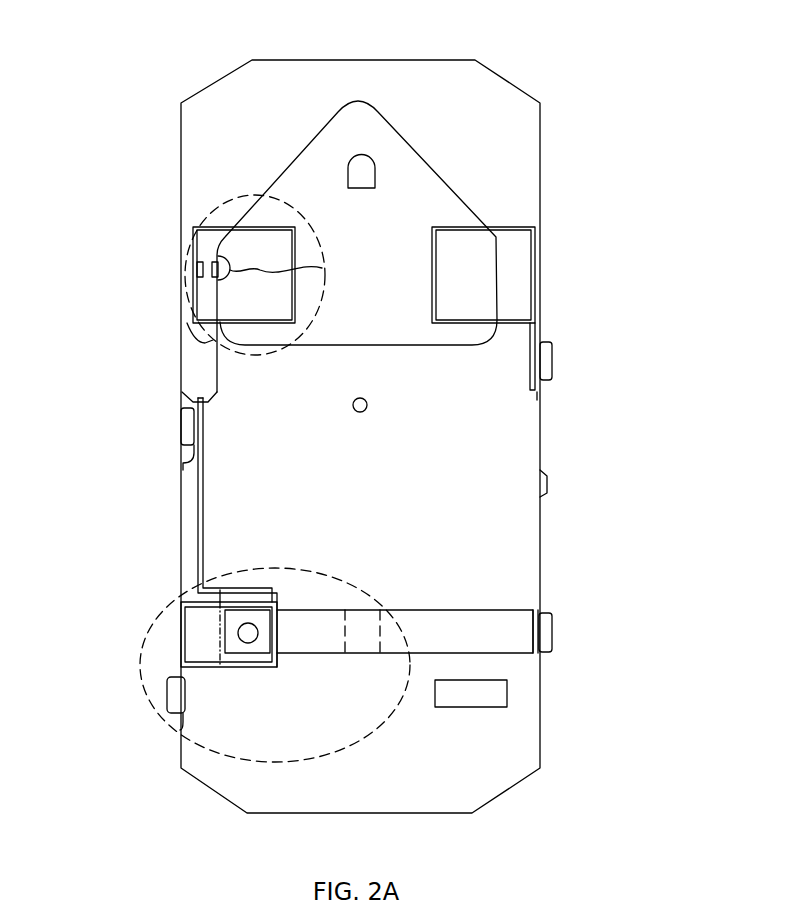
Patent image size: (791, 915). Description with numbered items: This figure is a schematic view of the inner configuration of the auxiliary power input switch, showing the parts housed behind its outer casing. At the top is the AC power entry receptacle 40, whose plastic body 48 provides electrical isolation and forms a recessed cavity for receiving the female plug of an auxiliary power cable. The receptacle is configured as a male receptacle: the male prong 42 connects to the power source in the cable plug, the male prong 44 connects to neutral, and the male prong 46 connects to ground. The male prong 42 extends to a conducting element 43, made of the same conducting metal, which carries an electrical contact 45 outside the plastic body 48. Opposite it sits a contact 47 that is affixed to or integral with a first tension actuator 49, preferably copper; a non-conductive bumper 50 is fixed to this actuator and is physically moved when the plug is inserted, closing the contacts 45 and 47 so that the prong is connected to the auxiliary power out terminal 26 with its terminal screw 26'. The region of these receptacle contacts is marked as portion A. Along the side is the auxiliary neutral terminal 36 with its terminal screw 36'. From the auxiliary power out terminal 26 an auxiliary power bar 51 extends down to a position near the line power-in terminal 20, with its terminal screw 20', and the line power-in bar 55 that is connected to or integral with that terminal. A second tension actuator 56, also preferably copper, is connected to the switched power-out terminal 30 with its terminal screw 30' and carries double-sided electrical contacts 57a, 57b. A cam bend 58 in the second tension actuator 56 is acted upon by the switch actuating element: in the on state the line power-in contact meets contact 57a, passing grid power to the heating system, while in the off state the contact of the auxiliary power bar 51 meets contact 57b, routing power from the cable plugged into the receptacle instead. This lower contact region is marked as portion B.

The line power-in terminal 20 is at (155, 736).
The terminal screw 20' is at (127, 694).
The auxiliary power out terminal 26 is at (158, 463).
The terminal screw 26' is at (137, 426).
The switched power-out terminal 30 is at (561, 610).
The terminal screw 30' is at (596, 632).
The auxiliary neutral terminal 36 is at (572, 404).
The terminal screw 36' is at (598, 361).
The AC power entry receptacle 40 is at (383, 135).
The male prong 42 is at (288, 240).
The conducting element 43 is at (220, 227).
The male prong 44 is at (533, 258).
The electrical contact 45 is at (197, 268).
The male prong 46 is at (378, 175).
The contact 47 is at (218, 256).
The plastic body 48 is at (527, 166).
The tension actuator 49 is at (212, 365).
The bumper 50 is at (291, 266).
The auxiliary power bar 51 is at (198, 512).
The line power-in bar 55 is at (193, 633).
The tension actuator 56 is at (302, 625).
The electrical contact 57a is at (284, 577).
The electrical contact 57b is at (248, 618).
The cam bend 58 is at (362, 625).
The portion A is at (175, 310).
The portion B is at (165, 592).